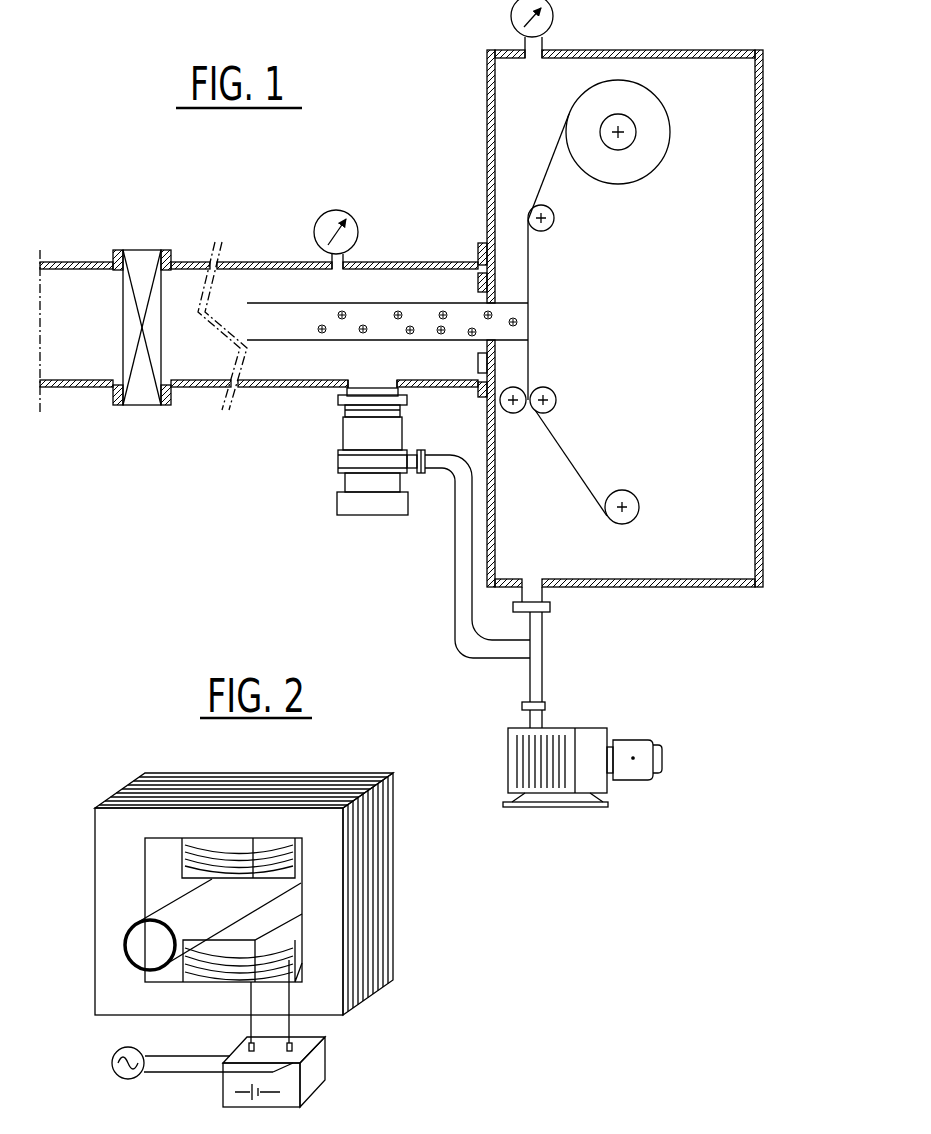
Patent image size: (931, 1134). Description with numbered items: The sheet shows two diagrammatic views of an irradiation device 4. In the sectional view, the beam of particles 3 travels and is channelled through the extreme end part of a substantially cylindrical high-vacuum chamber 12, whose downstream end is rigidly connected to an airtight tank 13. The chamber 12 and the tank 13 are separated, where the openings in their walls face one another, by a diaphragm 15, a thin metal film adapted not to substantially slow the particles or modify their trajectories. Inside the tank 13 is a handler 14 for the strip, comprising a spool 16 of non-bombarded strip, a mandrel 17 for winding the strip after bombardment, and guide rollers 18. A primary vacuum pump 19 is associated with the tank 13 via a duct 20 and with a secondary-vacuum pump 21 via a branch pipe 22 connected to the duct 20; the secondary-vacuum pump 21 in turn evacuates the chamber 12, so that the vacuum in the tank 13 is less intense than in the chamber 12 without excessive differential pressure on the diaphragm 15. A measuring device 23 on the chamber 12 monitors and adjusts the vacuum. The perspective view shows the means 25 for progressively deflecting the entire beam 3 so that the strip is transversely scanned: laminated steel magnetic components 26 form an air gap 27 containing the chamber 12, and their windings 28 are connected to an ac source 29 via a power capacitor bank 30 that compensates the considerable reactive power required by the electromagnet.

In FIG. 1, the beam of particles 3 is at (387, 308).
In FIG. 1, the irradiation device 4 is at (193, 402).
In FIG. 2, the irradiation device 4 is at (252, 887).
In FIG. 1, the high-vacuum chamber 12 is at (275, 262).
In FIG. 2, the high-vacuum chamber 12 is at (175, 919).
In FIG. 1, the airtight tank 13 is at (728, 135).
In FIG. 1, the handler 14 is at (547, 163).
In FIG. 1, the diaphragm 15 is at (478, 300).
In FIG. 1, the spool 16 is at (656, 125).
In FIG. 1, the mandrel 17 is at (633, 511).
In FIG. 1, the guide rollers 18 is at (554, 226).
In FIG. 1, the primary vacuum pump 19 is at (588, 737).
In FIG. 1, the duct 20 is at (533, 627).
In FIG. 1, the secondary-vacuum pump 21 is at (345, 460).
In FIG. 1, the branch pipe 22 is at (458, 582).
In FIG. 1, the measuring device 23 is at (328, 210).
In FIG. 2, the deflecting means 25 is at (205, 785).
In FIG. 2, the magnetic components 26 is at (128, 785).
In FIG. 2, the air gap 27 is at (175, 907).
In FIG. 2, the windings 28 is at (297, 940).
In FIG. 2, the ac source 29 is at (130, 1082).
In FIG. 2, the power capacitor bank 30 is at (310, 1080).